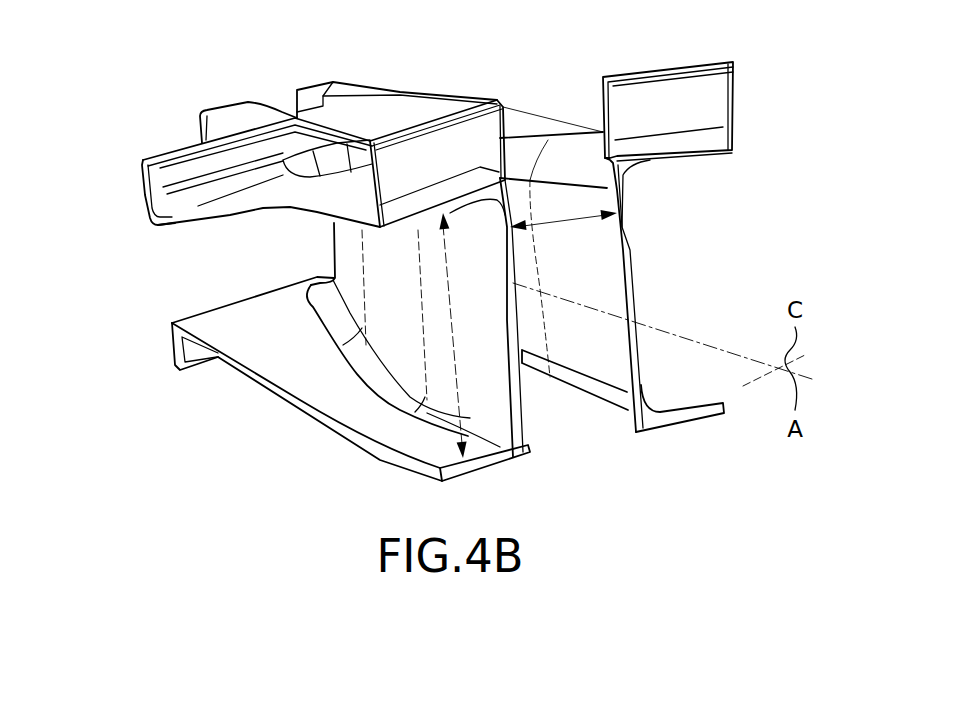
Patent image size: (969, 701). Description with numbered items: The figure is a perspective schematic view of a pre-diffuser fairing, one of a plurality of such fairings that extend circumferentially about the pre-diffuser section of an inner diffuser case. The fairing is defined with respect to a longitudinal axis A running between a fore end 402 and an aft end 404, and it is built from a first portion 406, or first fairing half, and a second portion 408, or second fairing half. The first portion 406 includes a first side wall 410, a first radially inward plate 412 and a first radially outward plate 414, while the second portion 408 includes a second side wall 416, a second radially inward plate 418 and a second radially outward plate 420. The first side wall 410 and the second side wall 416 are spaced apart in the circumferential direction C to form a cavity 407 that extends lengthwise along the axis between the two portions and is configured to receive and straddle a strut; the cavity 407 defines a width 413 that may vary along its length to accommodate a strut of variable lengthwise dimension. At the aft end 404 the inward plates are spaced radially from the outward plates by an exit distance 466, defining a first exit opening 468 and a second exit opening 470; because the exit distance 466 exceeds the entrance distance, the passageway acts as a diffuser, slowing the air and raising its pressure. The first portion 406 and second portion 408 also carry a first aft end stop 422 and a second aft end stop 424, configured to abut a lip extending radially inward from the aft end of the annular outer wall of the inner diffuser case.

The fore end 402 is at (194, 292).
The aft end 404 is at (634, 445).
The first portion 406 is at (583, 86).
The cavity 407 is at (597, 440).
The second portion 408 is at (321, 397).
The first side wall 410 is at (624, 238).
The first radially inward plate 412 is at (663, 393).
The width 413 is at (578, 222).
The first radially outward plate 414 is at (570, 132).
The second side wall 416 is at (518, 393).
The second radially inward plate 418 is at (357, 418).
The second radially outward plate 420 is at (268, 194).
The first aft end stop 422 is at (710, 83).
The second aft end stop 424 is at (483, 128).
The exit distance 466 is at (463, 433).
The first exit opening 468 is at (713, 259).
The second exit opening 470 is at (493, 395).